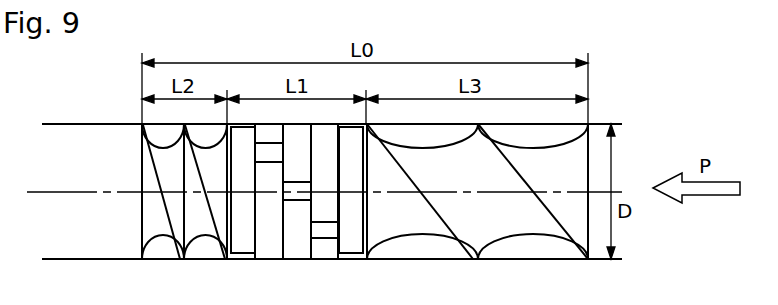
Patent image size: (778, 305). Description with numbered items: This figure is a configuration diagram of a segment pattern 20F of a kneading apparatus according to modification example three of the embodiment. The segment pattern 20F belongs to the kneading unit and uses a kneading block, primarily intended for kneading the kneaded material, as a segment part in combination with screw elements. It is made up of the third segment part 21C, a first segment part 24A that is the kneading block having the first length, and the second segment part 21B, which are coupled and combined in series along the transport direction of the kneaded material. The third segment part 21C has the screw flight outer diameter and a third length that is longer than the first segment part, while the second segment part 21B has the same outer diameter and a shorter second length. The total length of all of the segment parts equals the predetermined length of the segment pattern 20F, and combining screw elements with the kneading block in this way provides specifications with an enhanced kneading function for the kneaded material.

The segment pattern 20F is at (629, 116).
The second segment part 21B is at (163, 240).
The first segment part 24A is at (335, 250).
The third segment part 21C is at (503, 240).